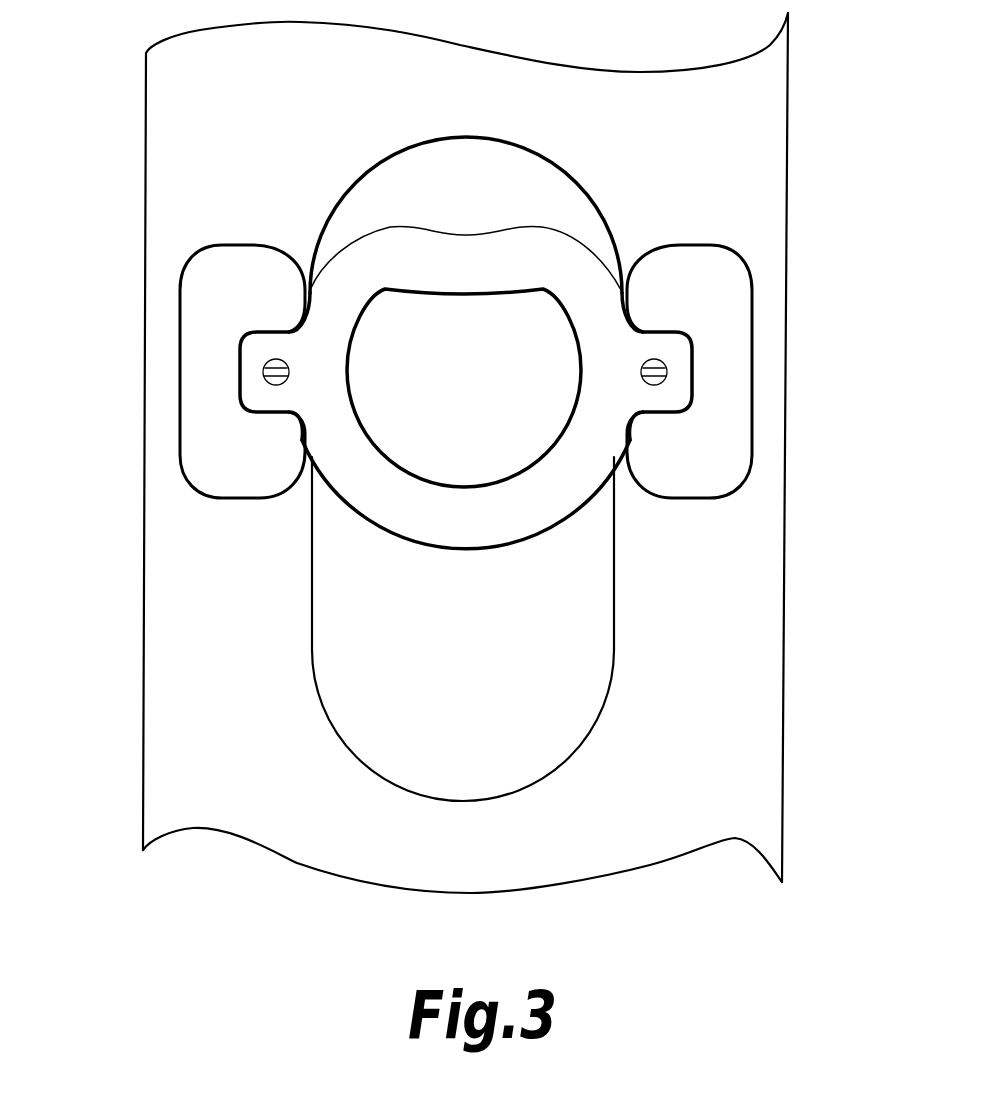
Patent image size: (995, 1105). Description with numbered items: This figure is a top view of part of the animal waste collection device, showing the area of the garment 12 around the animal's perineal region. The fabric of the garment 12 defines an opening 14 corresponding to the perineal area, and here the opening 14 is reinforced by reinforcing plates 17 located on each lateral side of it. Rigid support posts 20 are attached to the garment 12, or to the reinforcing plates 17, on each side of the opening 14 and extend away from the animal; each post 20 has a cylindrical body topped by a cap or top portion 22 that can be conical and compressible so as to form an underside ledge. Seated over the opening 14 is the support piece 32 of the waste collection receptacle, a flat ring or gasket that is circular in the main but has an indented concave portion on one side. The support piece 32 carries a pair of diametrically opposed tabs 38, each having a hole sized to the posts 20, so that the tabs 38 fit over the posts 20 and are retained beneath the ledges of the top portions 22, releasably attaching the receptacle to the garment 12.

The garment 12 is at (145, 173).
The opening 14 is at (352, 670).
The reinforcing plates 17 is at (202, 425).
The support posts 20 is at (266, 362).
The cap or top portion 22 is at (267, 383).
The support piece 32 is at (577, 273).
The tabs 38 is at (258, 342).